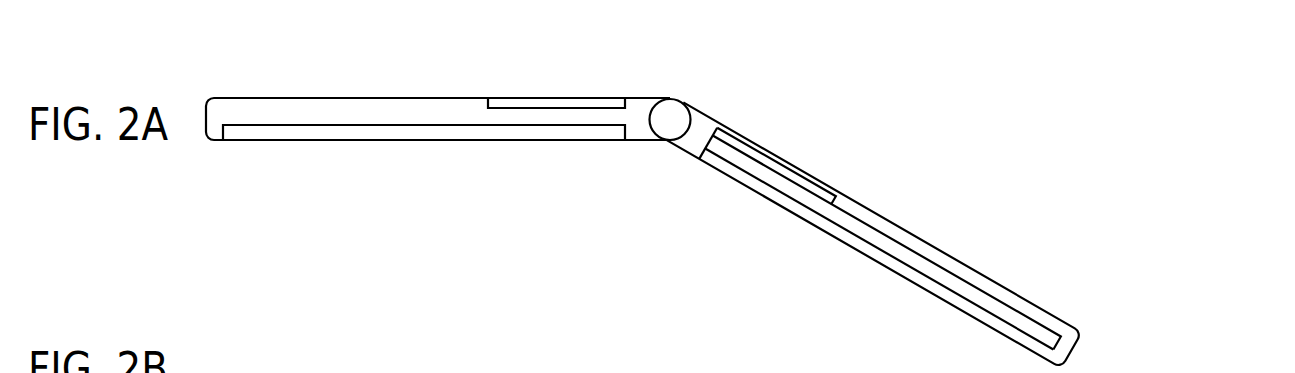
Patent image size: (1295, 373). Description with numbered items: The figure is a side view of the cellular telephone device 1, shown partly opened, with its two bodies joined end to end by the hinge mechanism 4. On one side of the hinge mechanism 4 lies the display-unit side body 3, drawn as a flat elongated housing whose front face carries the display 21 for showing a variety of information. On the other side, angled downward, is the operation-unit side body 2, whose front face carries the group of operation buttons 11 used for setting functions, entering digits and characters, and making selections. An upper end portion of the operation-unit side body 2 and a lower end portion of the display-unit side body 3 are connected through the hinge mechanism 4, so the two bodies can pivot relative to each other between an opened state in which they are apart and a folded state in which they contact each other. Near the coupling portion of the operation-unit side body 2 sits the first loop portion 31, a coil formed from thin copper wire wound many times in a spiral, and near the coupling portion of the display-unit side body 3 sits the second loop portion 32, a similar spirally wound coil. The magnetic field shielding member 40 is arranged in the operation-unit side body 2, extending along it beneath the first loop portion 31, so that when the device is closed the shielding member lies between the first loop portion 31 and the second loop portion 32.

In FIG. 2A, the cellular telephone device 1 is at (975, 153).
In FIG. 2B, the cellular telephone device 1 is at (1243, 372).
In FIG. 2A, the operation-unit side body 2 is at (1060, 317).
In FIG. 2A, the display-unit side body 3 is at (262, 98).
In FIG. 2A, the hinge mechanism 4 is at (667, 125).
In FIG. 2A, the group of operation buttons 11 is at (840, 235).
In FIG. 2A, the display 21 is at (357, 133).
In FIG. 2A, the first loop portion 31 is at (782, 158).
In FIG. 2A, the second loop portion 32 is at (571, 103).
In FIG. 2A, the magnetic field shielding member 40 is at (960, 288).